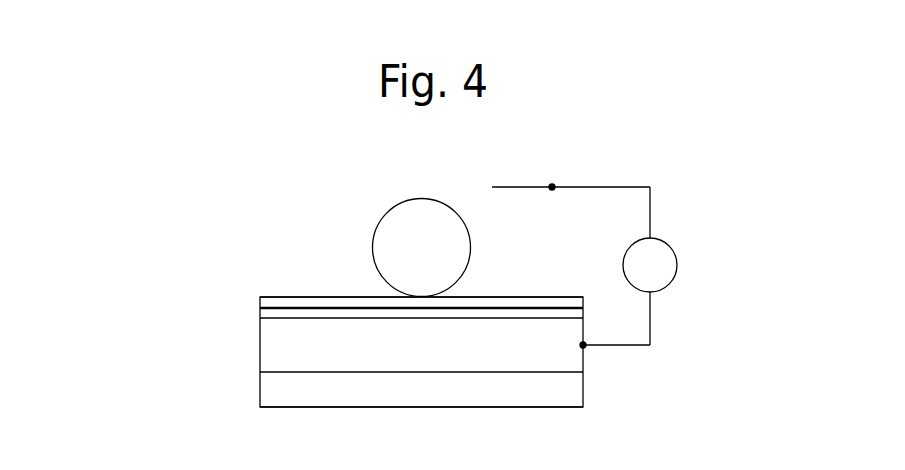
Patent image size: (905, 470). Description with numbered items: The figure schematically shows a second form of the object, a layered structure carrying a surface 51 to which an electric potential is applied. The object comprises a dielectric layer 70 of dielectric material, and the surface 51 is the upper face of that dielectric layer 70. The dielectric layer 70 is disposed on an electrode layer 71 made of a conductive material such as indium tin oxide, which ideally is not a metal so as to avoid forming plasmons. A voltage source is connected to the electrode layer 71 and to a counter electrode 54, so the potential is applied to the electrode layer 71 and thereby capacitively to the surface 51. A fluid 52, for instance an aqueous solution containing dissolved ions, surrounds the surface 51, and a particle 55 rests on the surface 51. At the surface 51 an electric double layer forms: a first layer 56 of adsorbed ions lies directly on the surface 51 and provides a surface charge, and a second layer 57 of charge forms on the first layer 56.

The fluid 52 is at (333, 232).
The second layer 57 is at (258, 300).
The surface 51 is at (312, 318).
The first layer 56 is at (284, 313).
The dielectric layer 70 is at (272, 355).
The electrode layer 71 is at (568, 387).
The particle 55 is at (417, 217).
The counter electrode 54 is at (530, 187).